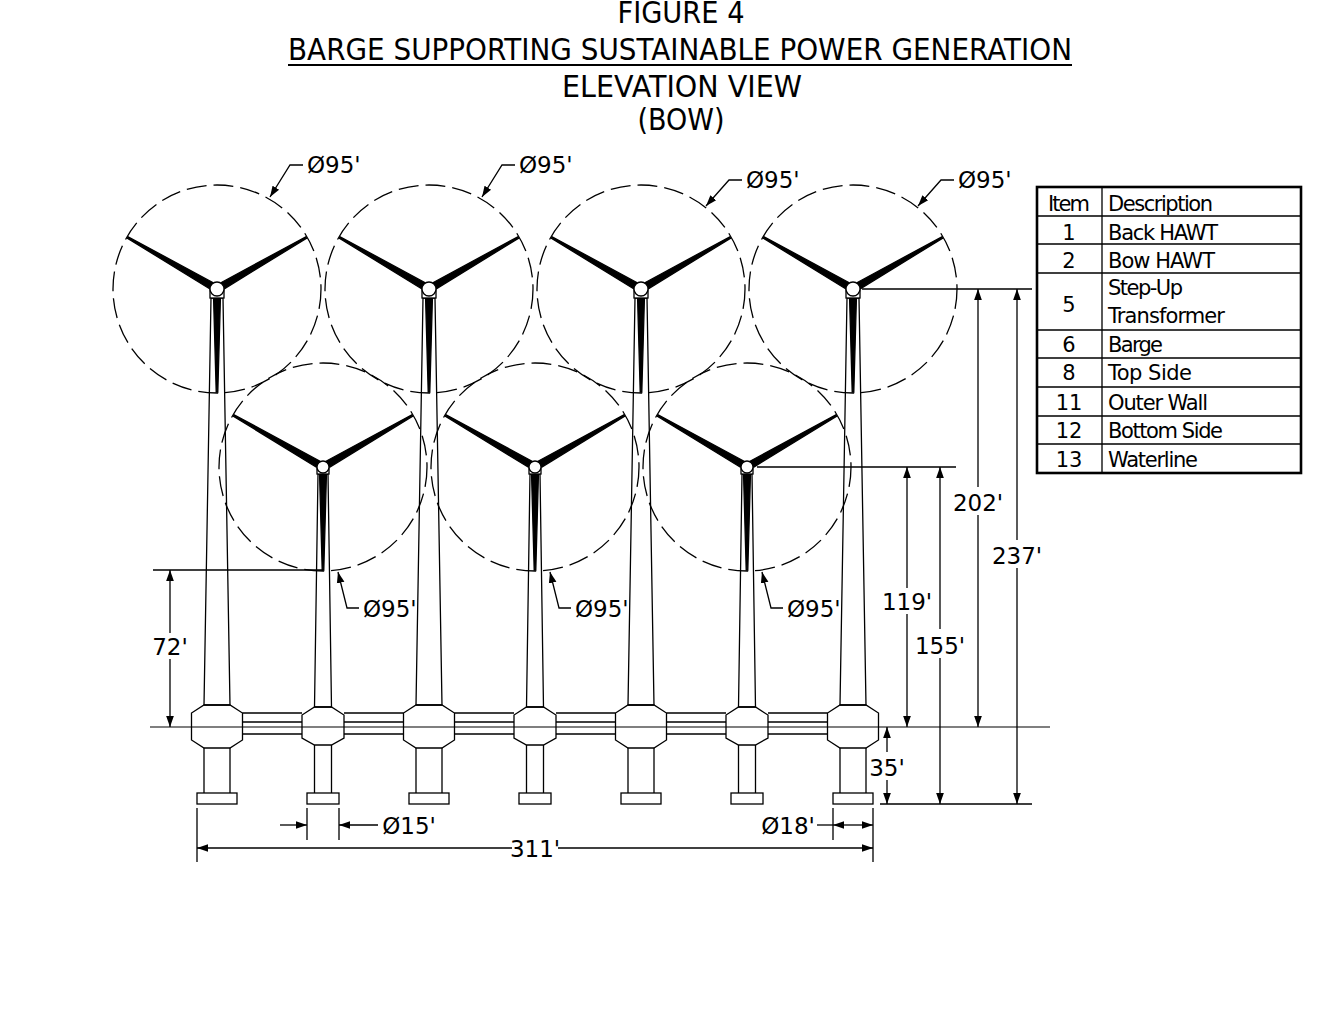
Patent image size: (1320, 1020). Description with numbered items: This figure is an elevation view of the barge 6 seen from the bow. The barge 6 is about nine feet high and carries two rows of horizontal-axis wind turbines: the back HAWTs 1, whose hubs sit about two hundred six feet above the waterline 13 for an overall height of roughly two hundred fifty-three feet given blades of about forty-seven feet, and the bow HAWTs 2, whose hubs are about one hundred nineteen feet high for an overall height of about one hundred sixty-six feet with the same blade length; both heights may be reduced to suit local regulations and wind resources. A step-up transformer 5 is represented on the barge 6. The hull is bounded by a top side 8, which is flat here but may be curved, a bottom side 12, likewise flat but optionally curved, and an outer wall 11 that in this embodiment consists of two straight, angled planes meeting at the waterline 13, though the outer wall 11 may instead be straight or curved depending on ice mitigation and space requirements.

The Back HAWT 1 is at (535, 469).
The Bow HAWT 2 is at (535, 559).
The Step-up Transformer 5 is at (552, 739).
The Barge 6 is at (535, 738).
The Top Side 8 is at (535, 695).
The Outer Wall 11 is at (535, 698).
The Bottom Side 12 is at (535, 752).
The Waterline 13 is at (609, 757).